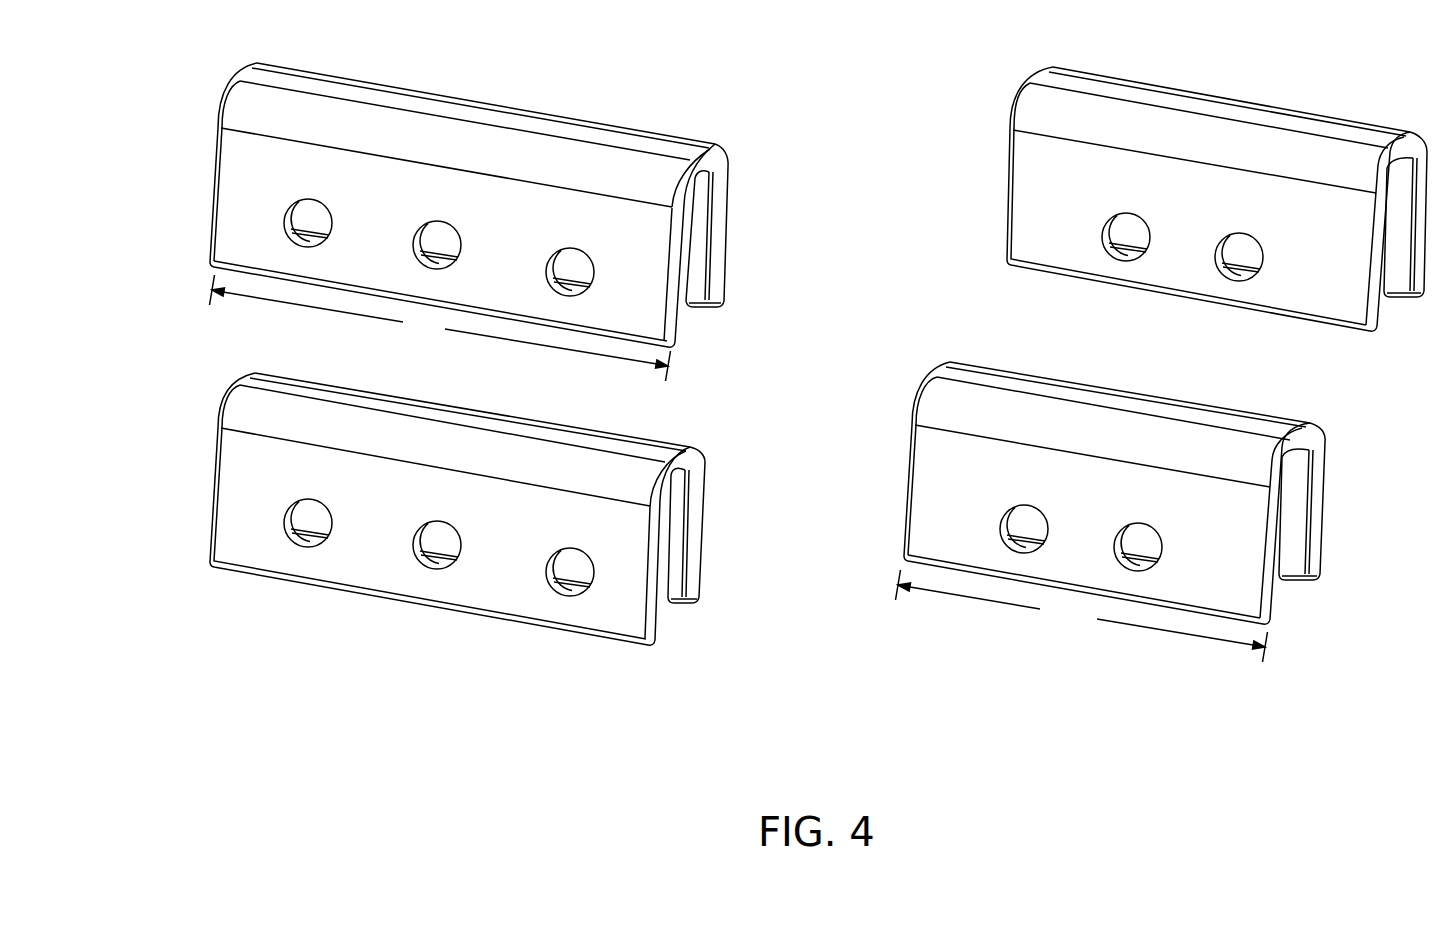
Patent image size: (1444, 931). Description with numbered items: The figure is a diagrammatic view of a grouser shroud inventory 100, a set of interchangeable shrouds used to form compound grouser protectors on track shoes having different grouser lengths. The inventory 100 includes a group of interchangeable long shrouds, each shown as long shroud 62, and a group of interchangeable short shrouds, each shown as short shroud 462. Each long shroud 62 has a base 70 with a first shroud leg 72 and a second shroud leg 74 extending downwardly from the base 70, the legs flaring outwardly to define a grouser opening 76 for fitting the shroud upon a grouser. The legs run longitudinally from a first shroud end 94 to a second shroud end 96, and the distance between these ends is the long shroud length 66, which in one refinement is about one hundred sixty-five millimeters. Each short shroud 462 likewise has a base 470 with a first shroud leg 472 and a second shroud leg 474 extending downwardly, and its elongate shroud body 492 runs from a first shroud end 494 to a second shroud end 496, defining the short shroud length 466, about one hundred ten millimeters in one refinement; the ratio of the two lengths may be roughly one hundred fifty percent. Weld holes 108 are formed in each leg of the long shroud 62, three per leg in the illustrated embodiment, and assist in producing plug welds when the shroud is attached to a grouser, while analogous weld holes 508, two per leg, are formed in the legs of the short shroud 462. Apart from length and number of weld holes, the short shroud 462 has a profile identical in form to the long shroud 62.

The long shroud 62 is at (421, 90).
The long shroud length 66 is at (440, 328).
The base 70 is at (253, 72).
The first shroud leg 72 is at (727, 282).
The second shroud leg 74 is at (680, 334).
The grouser opening 76 is at (698, 317).
The first shroud end 94 is at (207, 172).
The second shroud end 96 is at (742, 178).
The grouser shroud inventory 100 is at (198, 585).
The weld holes 108 is at (305, 212).
The short shroud 462 is at (1376, 122).
The short shroud length 466 is at (1082, 616).
The base 470 is at (972, 371).
The first shroud leg 472 is at (1324, 575).
The second shroud leg 474 is at (1283, 615).
The elongate shroud body 492 is at (1325, 455).
The first shroud end 494 is at (1120, 486).
The second shroud end 496 is at (1335, 541).
The weld holes 508 is at (1124, 227).